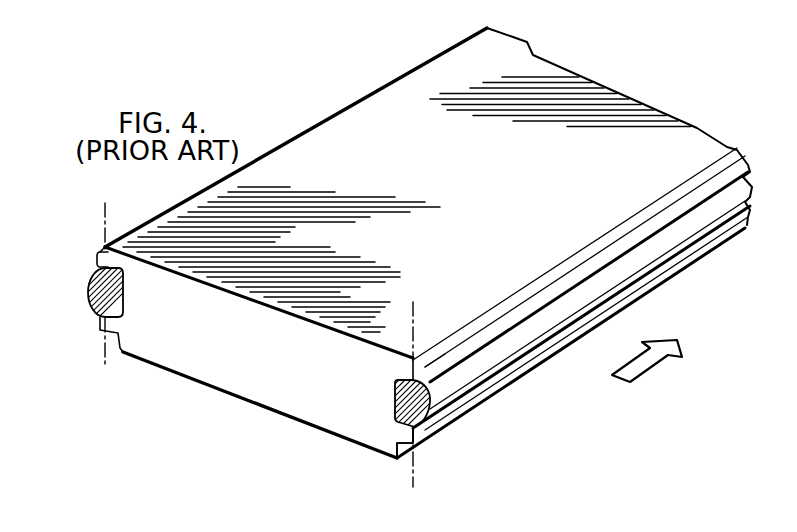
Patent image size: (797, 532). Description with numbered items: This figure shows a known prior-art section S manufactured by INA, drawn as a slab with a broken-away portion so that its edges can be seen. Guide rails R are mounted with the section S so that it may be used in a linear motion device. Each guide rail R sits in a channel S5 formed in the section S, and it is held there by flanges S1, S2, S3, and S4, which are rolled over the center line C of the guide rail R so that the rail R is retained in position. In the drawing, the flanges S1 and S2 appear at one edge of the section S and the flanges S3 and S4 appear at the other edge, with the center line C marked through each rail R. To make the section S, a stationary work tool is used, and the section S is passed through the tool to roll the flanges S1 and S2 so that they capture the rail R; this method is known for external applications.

The section S is at (344, 147).
The flange S1 is at (97, 317).
The flange S2 is at (105, 252).
The flange S3 is at (418, 437).
The flange S4 is at (430, 383).
The channel S5 is at (395, 395).
The guide rail R is at (438, 421).
The center line C is at (259, 346).